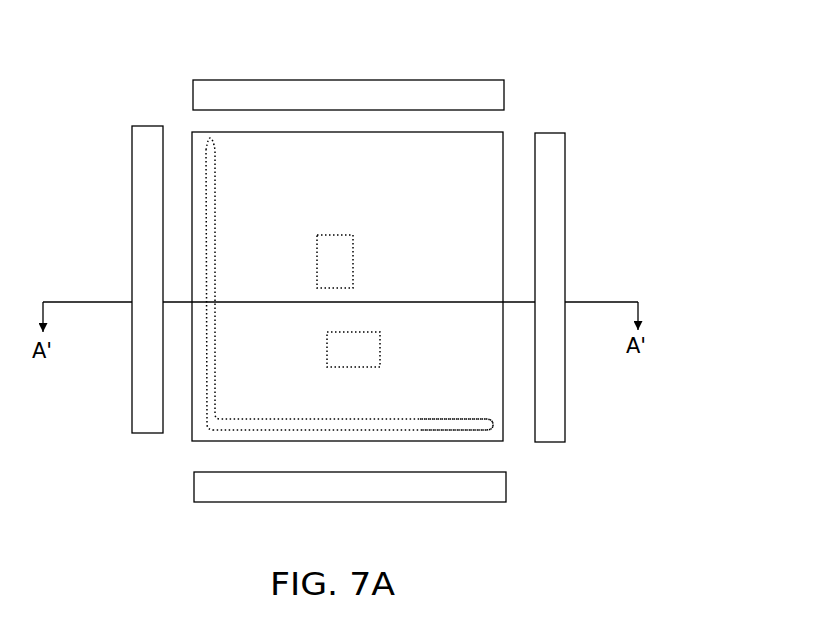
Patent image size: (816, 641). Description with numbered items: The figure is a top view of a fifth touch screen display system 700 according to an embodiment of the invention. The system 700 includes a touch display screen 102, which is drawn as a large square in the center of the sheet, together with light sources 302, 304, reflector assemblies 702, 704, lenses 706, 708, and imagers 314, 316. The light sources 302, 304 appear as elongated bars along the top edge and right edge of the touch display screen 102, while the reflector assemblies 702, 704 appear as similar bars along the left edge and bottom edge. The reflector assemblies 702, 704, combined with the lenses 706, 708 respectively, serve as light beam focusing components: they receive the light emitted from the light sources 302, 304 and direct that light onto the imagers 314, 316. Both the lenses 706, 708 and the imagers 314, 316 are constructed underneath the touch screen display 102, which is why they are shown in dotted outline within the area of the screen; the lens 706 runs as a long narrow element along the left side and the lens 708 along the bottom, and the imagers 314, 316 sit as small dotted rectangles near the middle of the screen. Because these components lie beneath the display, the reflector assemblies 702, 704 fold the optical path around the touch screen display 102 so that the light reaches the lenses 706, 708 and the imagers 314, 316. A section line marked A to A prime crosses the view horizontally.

The touch screen display system 700 is at (653, 110).
The touch display screen 102 is at (192, 132).
The light source 302 is at (260, 80).
The reflector assembly 704 is at (194, 483).
The reflector assembly 702 is at (132, 247).
The light source 304 is at (565, 243).
The imager 314 is at (358, 258).
The imager 316 is at (388, 348).
The lens 706 is at (215, 172).
The lens 708 is at (478, 428).